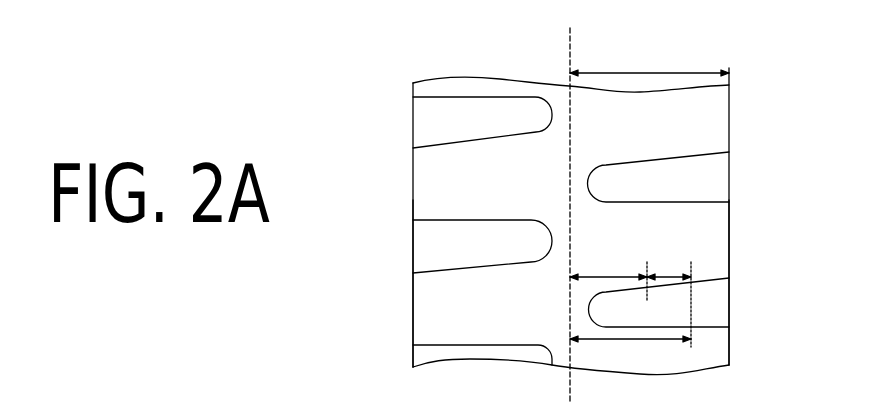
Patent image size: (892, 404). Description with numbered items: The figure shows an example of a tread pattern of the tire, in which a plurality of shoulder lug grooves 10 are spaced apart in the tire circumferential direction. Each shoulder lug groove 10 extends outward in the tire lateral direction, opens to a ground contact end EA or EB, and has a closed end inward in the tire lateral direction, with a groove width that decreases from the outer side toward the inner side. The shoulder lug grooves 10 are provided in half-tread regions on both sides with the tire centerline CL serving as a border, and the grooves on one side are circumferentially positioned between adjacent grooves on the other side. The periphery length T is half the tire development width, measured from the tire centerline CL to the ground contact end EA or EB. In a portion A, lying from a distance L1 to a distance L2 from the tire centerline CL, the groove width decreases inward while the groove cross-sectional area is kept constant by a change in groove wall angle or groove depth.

The shoulder lug groove 10 is at (428, 125).
The tire centerline CL is at (569, 202).
The periphery length T is at (649, 60).
The distance L1 is at (608, 274).
The portion A is at (669, 298).
The distance L2 is at (630, 352).
The ground contact end EA is at (733, 351).
The ground contact end EB is at (413, 322).